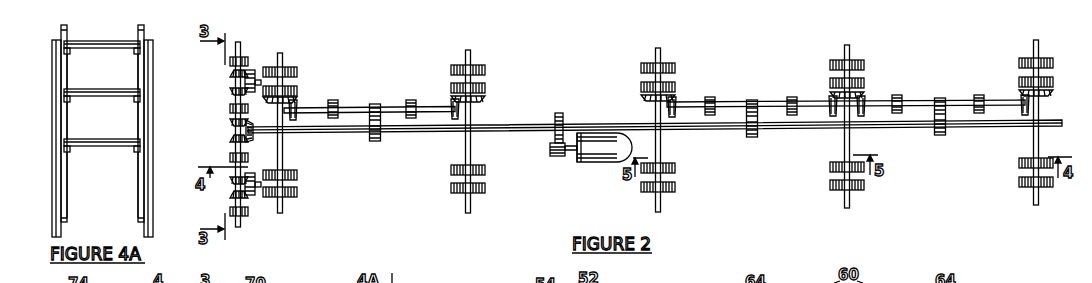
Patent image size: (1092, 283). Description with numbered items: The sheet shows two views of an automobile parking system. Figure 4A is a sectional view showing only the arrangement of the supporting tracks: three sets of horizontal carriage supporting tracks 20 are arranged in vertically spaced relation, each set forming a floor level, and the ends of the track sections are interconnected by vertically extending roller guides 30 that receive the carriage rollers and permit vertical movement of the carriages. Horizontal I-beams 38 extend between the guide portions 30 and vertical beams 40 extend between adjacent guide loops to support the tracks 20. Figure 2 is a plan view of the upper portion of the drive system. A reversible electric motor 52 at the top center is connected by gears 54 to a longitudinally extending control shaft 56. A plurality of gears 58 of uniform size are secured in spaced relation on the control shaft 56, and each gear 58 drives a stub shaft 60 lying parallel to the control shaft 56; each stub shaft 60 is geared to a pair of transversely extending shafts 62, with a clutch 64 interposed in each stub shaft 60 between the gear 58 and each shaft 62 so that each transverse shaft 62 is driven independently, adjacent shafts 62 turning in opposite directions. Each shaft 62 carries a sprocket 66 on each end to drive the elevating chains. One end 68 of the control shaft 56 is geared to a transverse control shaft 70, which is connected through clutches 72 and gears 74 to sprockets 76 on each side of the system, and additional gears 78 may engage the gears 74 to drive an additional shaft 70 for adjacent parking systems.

In FIG. 4A, the carriage supporting tracks 20 is at (133, 51).
In FIG. 4A, the roller guide 30 is at (137, 72).
In FIG. 4A, the I-beams 38 is at (95, 41).
In FIG. 4A, the vertical beams 40 is at (55, 62).
In FIG. 2, the reversible electric motor 52 is at (602, 143).
In FIG. 2, the gears 54 is at (553, 134).
In FIG. 2, the control shaft 56 is at (573, 126).
In FIG. 2, the gears 58 is at (380, 139).
In FIG. 2, the stub shaft 60 is at (356, 108).
In FIG. 2, the transverse shafts 62 is at (283, 155).
In FIG. 2, the clutch 64 is at (334, 100).
In FIG. 2, the sprocket 66 is at (298, 89).
In FIG. 2, the end of control shaft 68 is at (271, 134).
In FIG. 2, the transverse control shaft 70 is at (235, 50).
In FIG. 2, the clutches 72 is at (230, 107).
In FIG. 2, the gears 74 is at (230, 92).
In FIG. 2, the sprockets 76 is at (250, 70).
In FIG. 2, the additional gears 78 is at (230, 74).